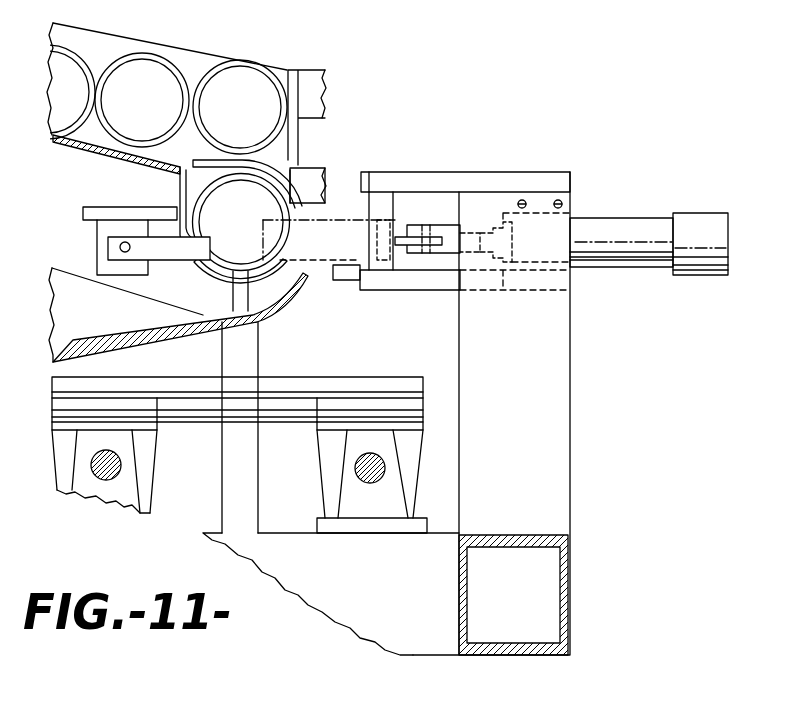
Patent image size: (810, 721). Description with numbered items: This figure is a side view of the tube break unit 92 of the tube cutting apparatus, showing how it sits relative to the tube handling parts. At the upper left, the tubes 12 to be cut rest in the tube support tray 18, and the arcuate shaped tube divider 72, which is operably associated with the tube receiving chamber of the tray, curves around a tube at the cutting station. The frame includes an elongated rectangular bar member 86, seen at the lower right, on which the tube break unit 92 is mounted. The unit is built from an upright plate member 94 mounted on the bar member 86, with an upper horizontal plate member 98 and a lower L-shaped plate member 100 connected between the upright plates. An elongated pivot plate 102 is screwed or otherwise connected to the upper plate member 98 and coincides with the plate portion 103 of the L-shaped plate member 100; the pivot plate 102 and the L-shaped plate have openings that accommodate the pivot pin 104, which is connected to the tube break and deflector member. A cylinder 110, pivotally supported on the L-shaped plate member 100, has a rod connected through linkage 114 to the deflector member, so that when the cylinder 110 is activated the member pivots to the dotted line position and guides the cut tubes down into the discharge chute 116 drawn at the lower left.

The tubes 12 is at (240, 70).
The tube support tray 18 is at (97, 153).
The arcuate shaped tube divider 72 is at (270, 163).
The elongated rectangular bar member 86 is at (567, 600).
The tube break unit 92 is at (537, 224).
The upright plate member 94 is at (555, 352).
The upper horizontal plate member 98 is at (573, 205).
The lower L-shaped plate member 100 is at (471, 288).
The elongated pivot plate 102 is at (465, 178).
The plate portion 103 is at (397, 280).
The pivot pin 104 is at (390, 205).
The cylinder 110 is at (682, 220).
The linkage 114 is at (413, 253).
The discharge chute 116 is at (140, 335).